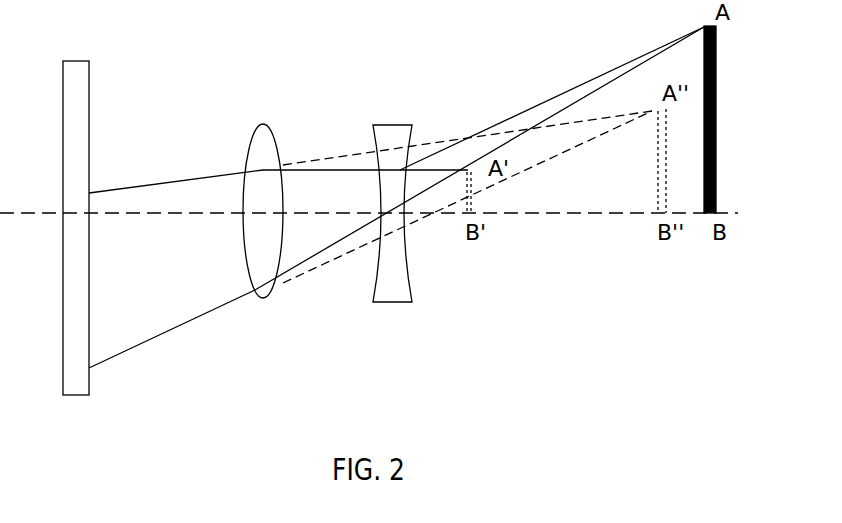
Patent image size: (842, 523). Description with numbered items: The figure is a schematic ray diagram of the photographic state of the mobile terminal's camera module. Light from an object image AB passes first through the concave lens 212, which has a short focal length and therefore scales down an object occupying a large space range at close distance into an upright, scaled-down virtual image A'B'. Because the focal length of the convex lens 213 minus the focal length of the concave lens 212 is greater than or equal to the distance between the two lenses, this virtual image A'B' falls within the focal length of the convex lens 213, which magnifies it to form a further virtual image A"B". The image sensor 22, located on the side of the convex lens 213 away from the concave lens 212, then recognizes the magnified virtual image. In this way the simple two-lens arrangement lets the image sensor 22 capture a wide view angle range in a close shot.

The image sensor 22 is at (73, 86).
The concave lens 212 is at (398, 285).
The convex lens 213 is at (262, 273).